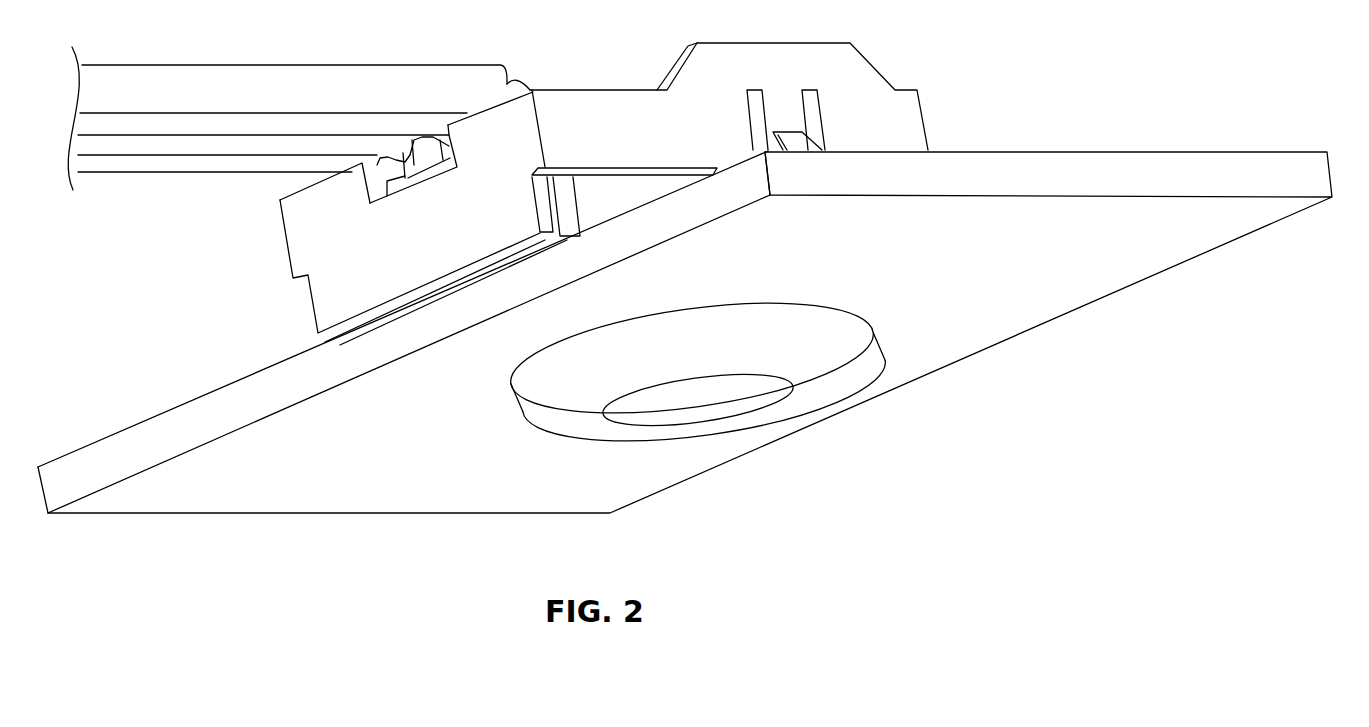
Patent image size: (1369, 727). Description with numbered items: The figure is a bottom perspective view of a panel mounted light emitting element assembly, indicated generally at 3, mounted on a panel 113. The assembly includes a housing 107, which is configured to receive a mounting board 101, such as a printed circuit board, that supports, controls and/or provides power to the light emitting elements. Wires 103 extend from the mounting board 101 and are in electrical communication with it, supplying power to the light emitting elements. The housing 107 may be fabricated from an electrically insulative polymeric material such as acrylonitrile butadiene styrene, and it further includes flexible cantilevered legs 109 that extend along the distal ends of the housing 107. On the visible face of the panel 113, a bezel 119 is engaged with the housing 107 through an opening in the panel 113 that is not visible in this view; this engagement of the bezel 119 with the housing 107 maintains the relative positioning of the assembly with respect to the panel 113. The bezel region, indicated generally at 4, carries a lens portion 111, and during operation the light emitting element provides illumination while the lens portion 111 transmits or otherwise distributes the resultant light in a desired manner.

The connector assembly 3 is at (643, 179).
The recess region 4 is at (729, 385).
The mounting board 101 is at (410, 182).
The wires 103 is at (257, 82).
The housing 107 is at (905, 125).
The flexible cantilevered legs 109 is at (788, 110).
The lens portion 111 is at (678, 414).
The panel 113 is at (1233, 183).
The bezel 119 is at (853, 330).